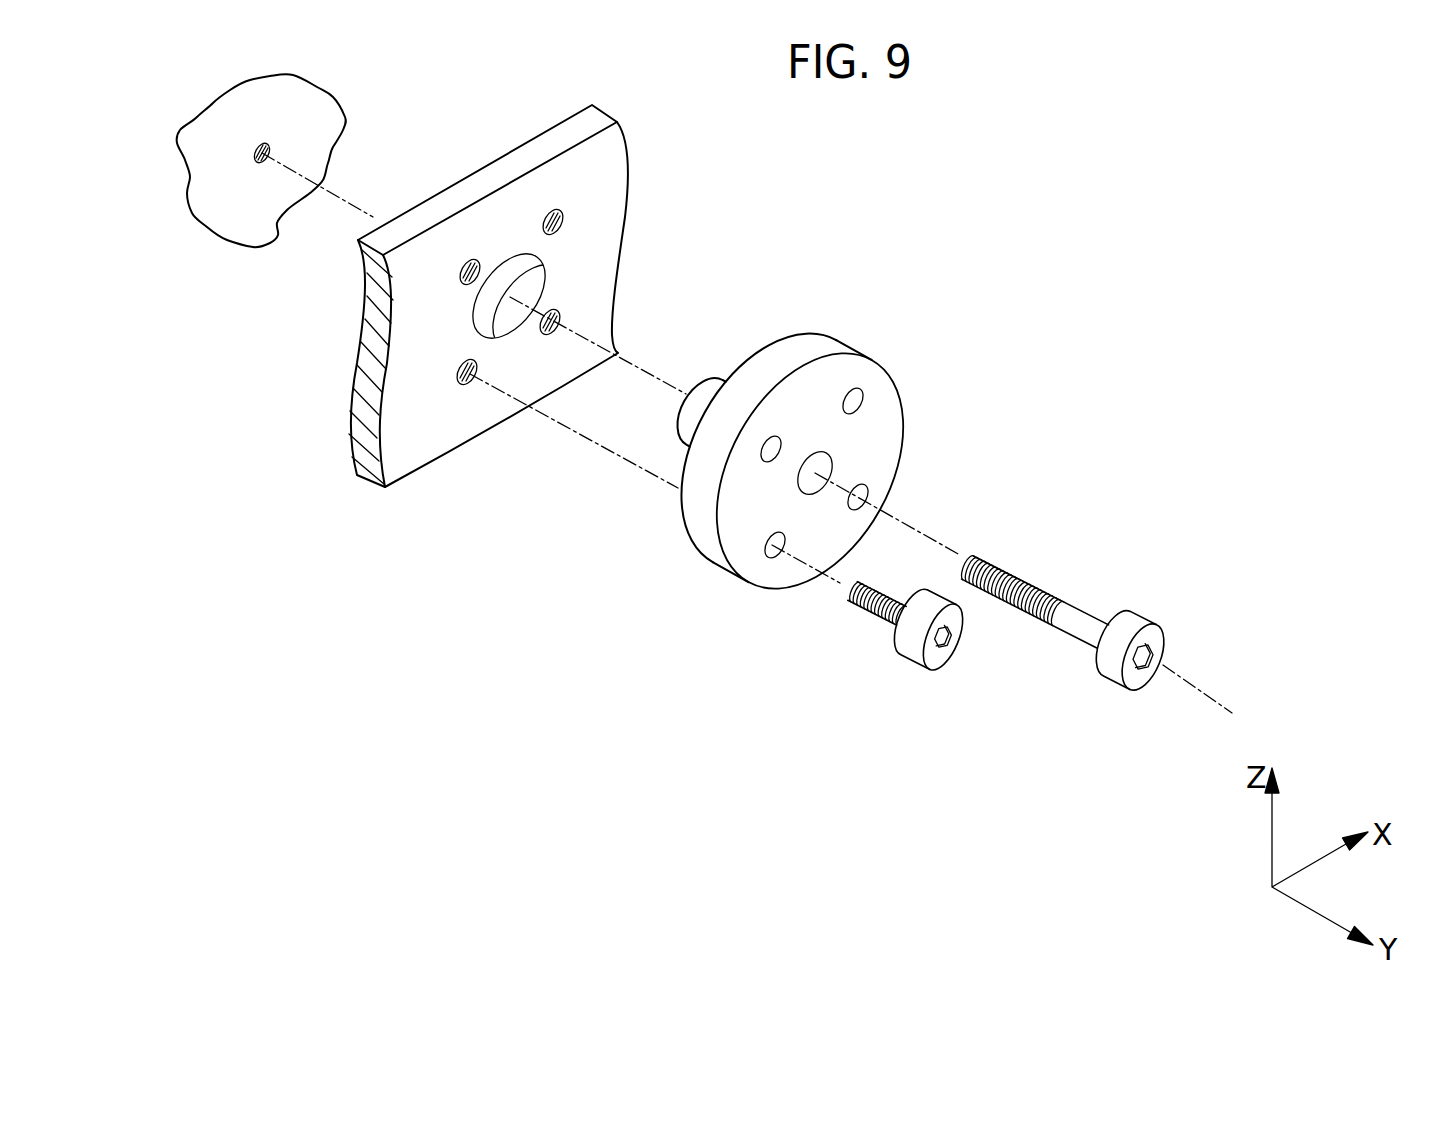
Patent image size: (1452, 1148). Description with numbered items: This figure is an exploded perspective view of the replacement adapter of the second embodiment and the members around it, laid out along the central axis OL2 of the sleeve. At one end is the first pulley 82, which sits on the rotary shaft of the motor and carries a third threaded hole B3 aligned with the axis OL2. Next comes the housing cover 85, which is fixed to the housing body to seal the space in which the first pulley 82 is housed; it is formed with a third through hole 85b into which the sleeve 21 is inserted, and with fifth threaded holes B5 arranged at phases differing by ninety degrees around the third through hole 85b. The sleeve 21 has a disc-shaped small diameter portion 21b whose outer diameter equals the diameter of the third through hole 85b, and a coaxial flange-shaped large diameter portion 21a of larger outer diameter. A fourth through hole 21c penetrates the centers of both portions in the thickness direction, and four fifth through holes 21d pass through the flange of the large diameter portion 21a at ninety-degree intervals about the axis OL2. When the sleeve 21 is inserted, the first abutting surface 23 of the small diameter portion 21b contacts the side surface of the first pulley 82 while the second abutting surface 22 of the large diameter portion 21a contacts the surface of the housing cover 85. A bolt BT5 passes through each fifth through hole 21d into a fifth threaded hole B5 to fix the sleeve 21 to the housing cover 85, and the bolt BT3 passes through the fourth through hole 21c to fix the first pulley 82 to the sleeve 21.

The first pulley 82 is at (226, 203).
The third threaded hole B3 is at (272, 148).
The housing cover 85 is at (417, 430).
The third through hole 85b is at (505, 270).
The fifth threaded hole B5 is at (473, 384).
The sleeve 21 is at (795, 442).
The large diameter portion 21a is at (886, 393).
The small diameter portion 21b is at (719, 375).
The fourth through hole 21c is at (831, 463).
The fifth through hole 21d is at (771, 558).
The second abutting surface 22 is at (683, 508).
The first abutting surface 23 is at (695, 384).
The bolt BT5 is at (907, 650).
The bolt BT3 is at (1132, 628).
The central axis of the sleeve OL2 is at (775, 444).